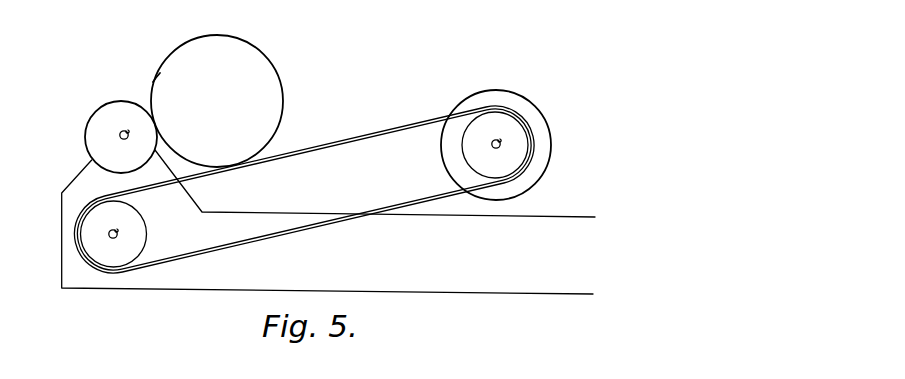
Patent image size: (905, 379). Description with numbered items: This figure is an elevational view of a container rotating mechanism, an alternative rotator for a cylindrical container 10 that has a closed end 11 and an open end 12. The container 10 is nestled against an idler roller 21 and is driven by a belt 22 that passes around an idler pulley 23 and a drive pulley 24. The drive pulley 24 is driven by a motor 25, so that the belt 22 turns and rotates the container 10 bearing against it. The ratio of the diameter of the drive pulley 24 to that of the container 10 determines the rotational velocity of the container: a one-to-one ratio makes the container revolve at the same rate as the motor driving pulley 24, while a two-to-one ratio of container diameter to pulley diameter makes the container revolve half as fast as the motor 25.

The cylindrical container 10 is at (278, 70).
The closed end 11 is at (210, 105).
The open end 12 is at (165, 77).
The idler roller 21 is at (98, 118).
The belt 22 is at (341, 147).
The idler pulley 23 is at (84, 230).
The drive pulley 24 is at (495, 146).
The motor 25 is at (546, 143).